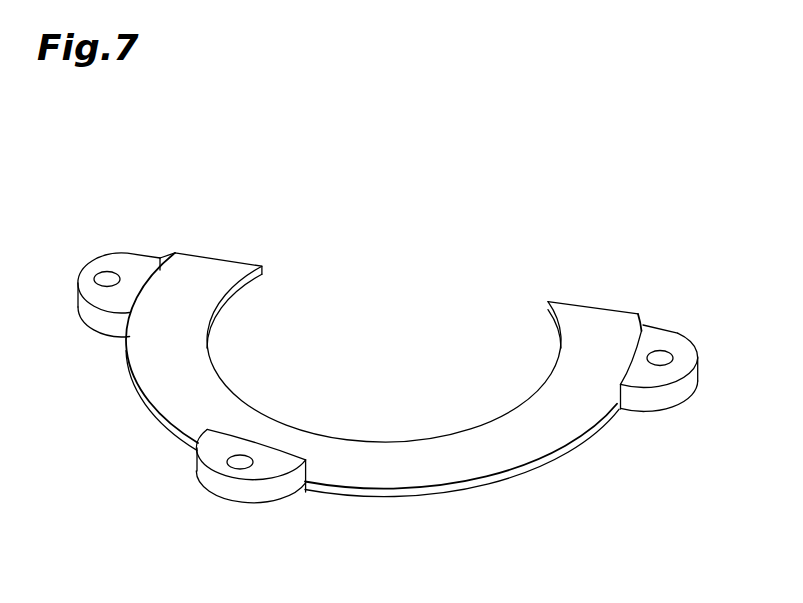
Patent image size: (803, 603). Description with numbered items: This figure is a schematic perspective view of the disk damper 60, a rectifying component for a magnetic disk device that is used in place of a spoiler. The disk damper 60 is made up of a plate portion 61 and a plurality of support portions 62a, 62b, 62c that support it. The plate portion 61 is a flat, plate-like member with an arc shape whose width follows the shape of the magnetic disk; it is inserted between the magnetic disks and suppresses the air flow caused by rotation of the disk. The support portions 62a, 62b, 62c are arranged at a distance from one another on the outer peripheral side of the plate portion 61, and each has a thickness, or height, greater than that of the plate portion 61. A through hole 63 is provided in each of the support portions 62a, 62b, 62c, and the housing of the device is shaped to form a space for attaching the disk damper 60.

The disk damper 60 is at (311, 147).
The plate portion 61 is at (199, 373).
The support portion 62a is at (95, 314).
The support portion 62b is at (257, 497).
The support portion 62c is at (665, 395).
The through hole 63 is at (101, 272).